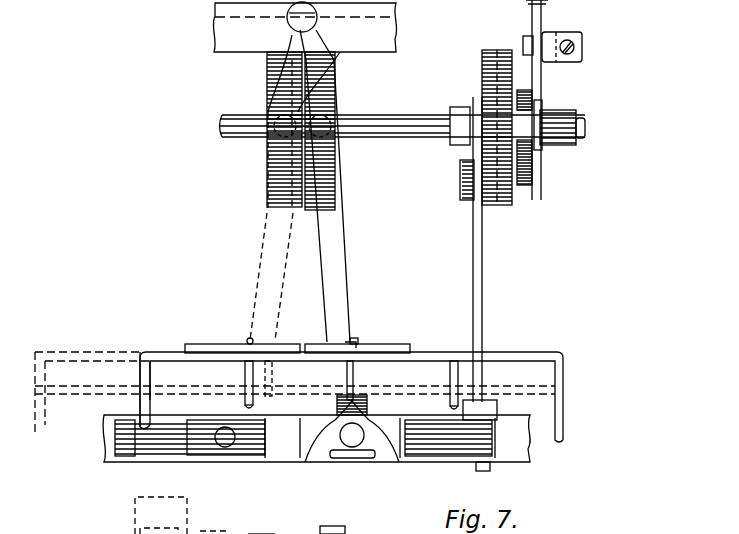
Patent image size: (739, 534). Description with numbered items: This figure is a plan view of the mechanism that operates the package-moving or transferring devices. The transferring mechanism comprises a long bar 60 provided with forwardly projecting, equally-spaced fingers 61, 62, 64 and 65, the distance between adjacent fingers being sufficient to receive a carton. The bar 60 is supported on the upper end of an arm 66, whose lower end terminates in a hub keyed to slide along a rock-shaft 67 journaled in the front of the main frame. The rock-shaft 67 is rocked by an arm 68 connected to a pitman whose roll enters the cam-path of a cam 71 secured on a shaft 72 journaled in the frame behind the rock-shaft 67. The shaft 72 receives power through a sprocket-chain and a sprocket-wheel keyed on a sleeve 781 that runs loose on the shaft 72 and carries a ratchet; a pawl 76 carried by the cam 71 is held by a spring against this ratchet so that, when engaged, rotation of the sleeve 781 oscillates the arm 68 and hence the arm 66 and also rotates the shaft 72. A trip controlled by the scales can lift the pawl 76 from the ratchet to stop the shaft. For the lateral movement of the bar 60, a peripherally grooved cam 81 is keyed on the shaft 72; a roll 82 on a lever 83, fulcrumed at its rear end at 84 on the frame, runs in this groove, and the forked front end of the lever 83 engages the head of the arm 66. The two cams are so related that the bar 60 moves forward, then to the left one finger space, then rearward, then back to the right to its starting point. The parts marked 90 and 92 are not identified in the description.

The bar 60 is at (420, 352).
The finger 61 is at (560, 378).
The finger 62 is at (456, 380).
The finger 64 is at (248, 370).
The finger 65 is at (141, 352).
The arm 66 is at (390, 455).
The rock-shaft 67 is at (277, 433).
The arm 68 is at (355, 375).
The cam 71 is at (498, 52).
The shaft 72 is at (585, 140).
The pawl 76 is at (530, 167).
The sleeve 781 is at (553, 145).
The peripherally grooved cam 81 is at (336, 160).
The roll 82 is at (262, 150).
The lever 83 is at (338, 280).
The fulcrum 84 is at (288, 26).
The nut 90 is at (288, 533).
The plate 92 is at (263, 533).